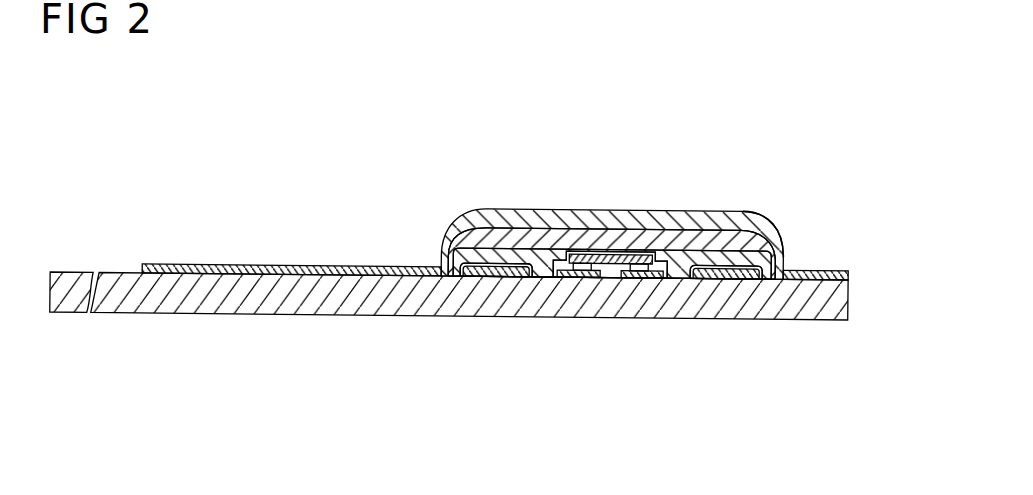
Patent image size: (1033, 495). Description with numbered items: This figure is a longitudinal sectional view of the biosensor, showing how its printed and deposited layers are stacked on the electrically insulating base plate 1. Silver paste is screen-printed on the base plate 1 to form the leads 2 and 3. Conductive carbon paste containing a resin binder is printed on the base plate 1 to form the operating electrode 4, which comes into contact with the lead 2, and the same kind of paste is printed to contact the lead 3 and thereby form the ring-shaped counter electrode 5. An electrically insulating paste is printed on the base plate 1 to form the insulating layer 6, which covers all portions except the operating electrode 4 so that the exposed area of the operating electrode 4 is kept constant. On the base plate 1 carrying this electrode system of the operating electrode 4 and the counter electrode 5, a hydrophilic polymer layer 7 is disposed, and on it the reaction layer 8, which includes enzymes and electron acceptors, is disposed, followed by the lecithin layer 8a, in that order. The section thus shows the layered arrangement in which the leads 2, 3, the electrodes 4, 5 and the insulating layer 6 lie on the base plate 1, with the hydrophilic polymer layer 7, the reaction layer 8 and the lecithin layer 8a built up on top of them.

The electrically insulating base plate 1 is at (231, 314).
The lead 2 is at (625, 278).
The lead 3 is at (495, 278).
The operating electrode 4 is at (609, 256).
The counter electrode 5 is at (497, 262).
The insulating layer 6 is at (335, 264).
The hydrophilic polymer layer 7 is at (636, 252).
The reaction layer 8 is at (546, 224).
The lecithin layer 8a is at (752, 212).